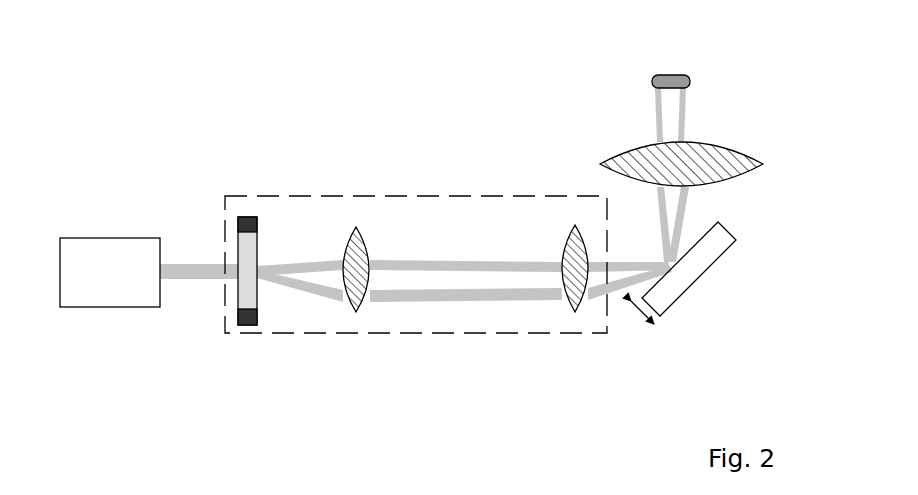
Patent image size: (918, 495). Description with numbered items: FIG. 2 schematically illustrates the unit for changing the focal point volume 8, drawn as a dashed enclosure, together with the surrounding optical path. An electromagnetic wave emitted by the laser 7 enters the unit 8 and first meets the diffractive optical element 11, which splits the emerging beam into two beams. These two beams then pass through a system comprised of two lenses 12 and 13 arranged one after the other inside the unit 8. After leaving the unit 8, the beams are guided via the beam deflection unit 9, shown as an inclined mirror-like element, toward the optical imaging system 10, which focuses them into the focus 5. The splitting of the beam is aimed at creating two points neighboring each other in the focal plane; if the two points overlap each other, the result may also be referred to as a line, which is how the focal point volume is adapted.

The focus 5 is at (698, 77).
The laser 7 is at (110, 272).
The unit for changing the focal point volume 8 is at (380, 190).
The beam deflection unit 9 is at (725, 264).
The optical imaging system 10 is at (621, 150).
The diffractive optical element 11 is at (252, 209).
The lens 12 is at (357, 313).
The lens 13 is at (579, 308).